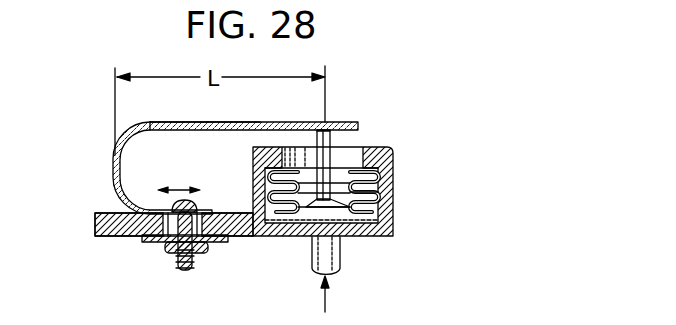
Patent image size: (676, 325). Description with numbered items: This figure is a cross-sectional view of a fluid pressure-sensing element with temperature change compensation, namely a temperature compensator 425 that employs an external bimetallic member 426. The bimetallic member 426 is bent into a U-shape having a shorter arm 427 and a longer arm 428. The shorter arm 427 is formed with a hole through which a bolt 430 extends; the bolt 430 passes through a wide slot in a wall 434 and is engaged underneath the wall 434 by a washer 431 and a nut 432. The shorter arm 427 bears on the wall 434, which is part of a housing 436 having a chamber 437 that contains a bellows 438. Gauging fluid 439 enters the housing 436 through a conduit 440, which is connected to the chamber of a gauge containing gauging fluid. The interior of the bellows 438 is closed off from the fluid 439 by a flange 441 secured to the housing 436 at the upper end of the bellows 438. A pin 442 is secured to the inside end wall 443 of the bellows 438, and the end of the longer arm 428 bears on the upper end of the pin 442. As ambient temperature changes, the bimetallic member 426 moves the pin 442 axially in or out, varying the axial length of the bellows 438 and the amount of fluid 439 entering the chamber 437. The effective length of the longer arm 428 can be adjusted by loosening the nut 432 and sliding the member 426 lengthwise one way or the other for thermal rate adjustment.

The temperature compensator 425 is at (106, 193).
The bimetallic member 426 is at (201, 121).
The shorter arm 427 is at (210, 211).
The longer arm 428 is at (300, 121).
The bolt 430 is at (190, 274).
The washer 431 is at (157, 243).
The nut 432 is at (226, 250).
The wall 434 is at (114, 233).
The housing 436 is at (356, 236).
The chamber 437 is at (378, 176).
The bellows 438 is at (380, 192).
The gauging fluid 439 is at (313, 268).
The conduit 440 is at (340, 257).
The flange 441 is at (381, 150).
The pin 442 is at (333, 140).
The inside end wall 443 is at (380, 219).